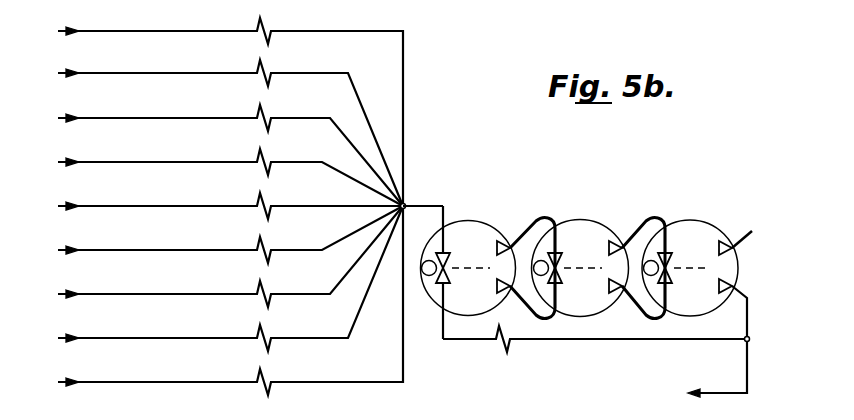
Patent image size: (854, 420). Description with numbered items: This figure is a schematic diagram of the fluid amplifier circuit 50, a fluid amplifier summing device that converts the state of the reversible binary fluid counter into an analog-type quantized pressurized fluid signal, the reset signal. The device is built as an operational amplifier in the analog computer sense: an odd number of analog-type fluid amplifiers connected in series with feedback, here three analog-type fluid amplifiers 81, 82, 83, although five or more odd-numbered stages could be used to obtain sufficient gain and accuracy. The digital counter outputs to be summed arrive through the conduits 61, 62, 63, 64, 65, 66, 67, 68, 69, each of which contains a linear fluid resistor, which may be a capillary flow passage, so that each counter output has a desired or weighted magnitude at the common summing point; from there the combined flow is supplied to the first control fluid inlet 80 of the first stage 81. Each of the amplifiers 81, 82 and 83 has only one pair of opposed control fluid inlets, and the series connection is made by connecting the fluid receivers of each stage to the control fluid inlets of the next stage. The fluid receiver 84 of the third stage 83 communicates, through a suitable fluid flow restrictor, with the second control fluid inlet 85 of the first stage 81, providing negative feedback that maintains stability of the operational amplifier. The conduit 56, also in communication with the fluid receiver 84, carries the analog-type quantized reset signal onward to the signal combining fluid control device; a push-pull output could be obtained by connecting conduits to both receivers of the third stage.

The fluid amplifier circuit 50 is at (452, 158).
The conduit 56 is at (747, 372).
The conduit 61 is at (58, 29).
The conduit 62 is at (57, 71).
The conduit 63 is at (58, 116).
The conduit 64 is at (58, 160).
The conduit 65 is at (58, 204).
The conduit 66 is at (59, 248).
The conduit 67 is at (59, 292).
The conduit 68 is at (59, 336).
The conduit 69 is at (63, 380).
The first control fluid inlet 80 is at (452, 222).
The first stage analog-type fluid amplifier 81 is at (476, 222).
The second stage analog-type fluid amplifier 82 is at (583, 220).
The third stage analog-type fluid amplifier 83 is at (693, 220).
The fluid receiver 84 is at (736, 300).
The second control fluid inlet 85 is at (440, 298).